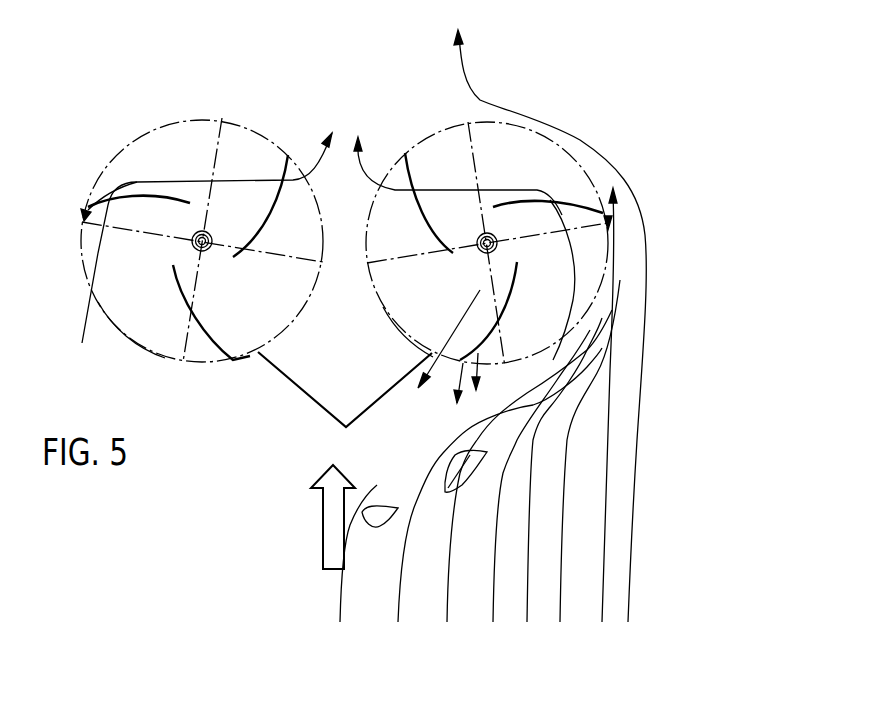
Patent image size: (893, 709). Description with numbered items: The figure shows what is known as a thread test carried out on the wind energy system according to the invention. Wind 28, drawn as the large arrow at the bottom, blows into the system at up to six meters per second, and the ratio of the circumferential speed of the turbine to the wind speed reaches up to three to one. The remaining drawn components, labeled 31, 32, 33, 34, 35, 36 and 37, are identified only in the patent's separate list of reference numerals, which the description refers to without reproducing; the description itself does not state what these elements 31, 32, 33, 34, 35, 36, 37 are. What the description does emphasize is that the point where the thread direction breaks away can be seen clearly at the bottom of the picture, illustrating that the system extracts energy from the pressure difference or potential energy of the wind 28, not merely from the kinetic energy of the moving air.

The wind 28 is at (328, 527).
The housing wall 31 is at (357, 329).
The rotor 32 is at (346, 227).
The outlet air flow 33 is at (535, 320).
The flow arrow 34 is at (349, 157).
The separating wedge 35 is at (345, 348).
The flow arrows 36 is at (447, 357).
The particles 37 is at (424, 488).